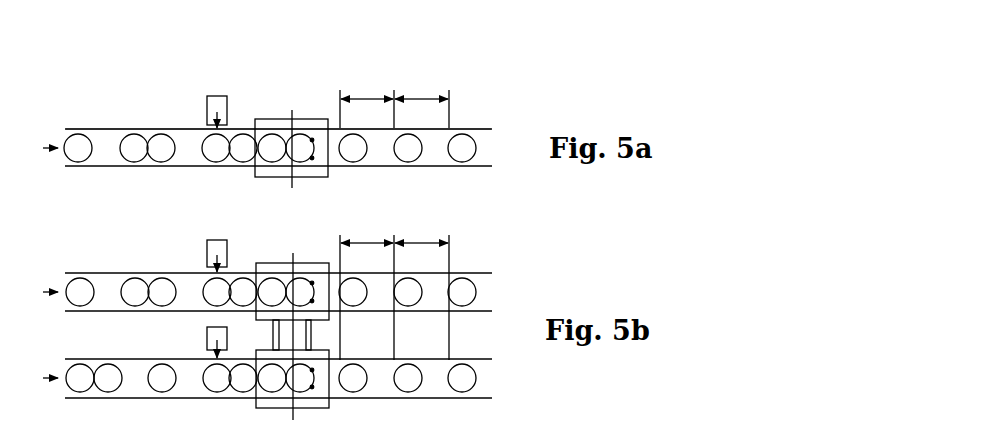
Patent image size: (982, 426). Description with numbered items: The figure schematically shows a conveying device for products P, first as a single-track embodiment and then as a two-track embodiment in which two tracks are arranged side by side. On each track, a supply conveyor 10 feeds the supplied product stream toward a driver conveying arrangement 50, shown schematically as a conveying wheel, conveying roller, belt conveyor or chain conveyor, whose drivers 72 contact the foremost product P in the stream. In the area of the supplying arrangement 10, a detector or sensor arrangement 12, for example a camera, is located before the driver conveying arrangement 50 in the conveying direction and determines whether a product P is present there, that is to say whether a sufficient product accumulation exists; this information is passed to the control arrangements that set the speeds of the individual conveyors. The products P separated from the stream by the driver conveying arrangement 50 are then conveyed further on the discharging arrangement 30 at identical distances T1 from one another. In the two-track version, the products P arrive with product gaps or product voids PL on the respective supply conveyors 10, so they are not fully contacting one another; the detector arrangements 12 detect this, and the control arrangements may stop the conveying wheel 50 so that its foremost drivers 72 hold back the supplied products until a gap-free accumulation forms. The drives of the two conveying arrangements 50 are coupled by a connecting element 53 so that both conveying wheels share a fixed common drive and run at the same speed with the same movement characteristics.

In FIG. 5A, the supplying arrangements 10 is at (87, 128).
In FIG. 5B, the supplying arrangements 10 is at (267, 335).
In FIG. 5A, the detector or sensor arrangement 12 is at (217, 101).
In FIG. 5B, the detector or sensor arrangement 12 is at (216, 246).
In FIG. 5A, the discharging arrangements 30 is at (478, 127).
In FIG. 5A, the driver conveying arrangements 50 is at (277, 121).
In FIG. 5B, the driver conveying arrangements 50 is at (292, 336).
In FIG. 5B, the connecting element 53 is at (308, 335).
In FIG. 5A, the drivers 72 is at (313, 138).
In FIG. 5B, the drivers 72 is at (312, 335).
In FIG. 5A, the product P is at (78, 153).
In FIG. 5B, the product P is at (271, 335).
In FIG. 5A, the product gaps or product voids PL is at (108, 150).
In FIG. 5B, the product gaps or product voids PL is at (118, 236).
In FIG. 5A, the identical distances T1 is at (394, 106).
In FIG. 5B, the identical distances T1 is at (394, 294).